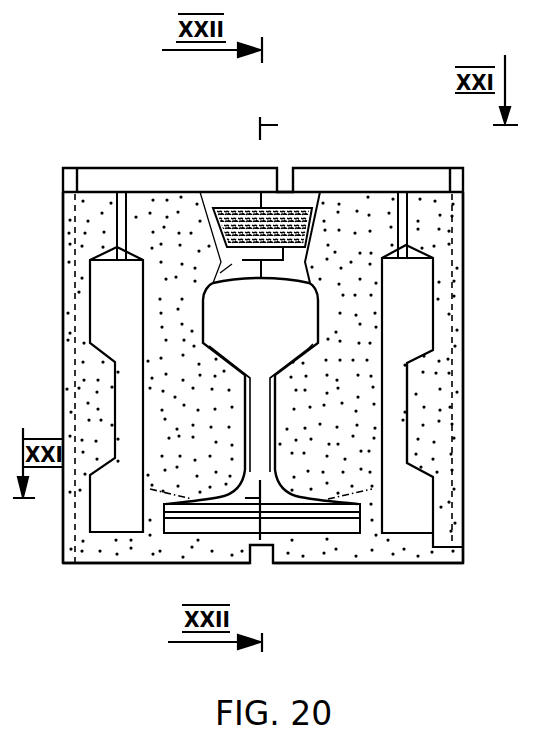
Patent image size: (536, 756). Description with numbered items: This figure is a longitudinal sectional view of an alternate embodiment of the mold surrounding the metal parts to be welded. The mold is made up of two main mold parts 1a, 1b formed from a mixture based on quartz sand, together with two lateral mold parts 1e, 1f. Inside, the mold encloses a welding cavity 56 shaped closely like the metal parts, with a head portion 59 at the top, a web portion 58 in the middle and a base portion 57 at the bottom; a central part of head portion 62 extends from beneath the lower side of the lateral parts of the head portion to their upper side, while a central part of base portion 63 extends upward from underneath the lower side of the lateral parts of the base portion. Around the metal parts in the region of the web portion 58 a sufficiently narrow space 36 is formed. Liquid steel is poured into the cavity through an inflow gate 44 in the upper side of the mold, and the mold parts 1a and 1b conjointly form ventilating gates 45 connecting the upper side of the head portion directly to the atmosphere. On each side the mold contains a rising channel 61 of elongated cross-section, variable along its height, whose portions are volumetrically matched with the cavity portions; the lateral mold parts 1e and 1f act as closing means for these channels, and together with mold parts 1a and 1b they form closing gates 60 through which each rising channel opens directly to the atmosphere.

The inflow gate 44 is at (220, 210).
The ventilating gate 45 is at (250, 252).
The closing gate 60 is at (399, 192).
The welding cavity 56 is at (211, 284).
The head portion 59 is at (203, 322).
The mold part 1e is at (87, 386).
The central part of head portion 62 is at (317, 342).
The web portion 58 is at (281, 375).
The rising channel 61 is at (396, 394).
The mold part 1f is at (452, 422).
The space 36 is at (275, 445).
The base portion 57 is at (360, 513).
The mold part 1a is at (148, 565).
The central part of base portion 63 is at (313, 527).
The mold part 1b is at (402, 552).